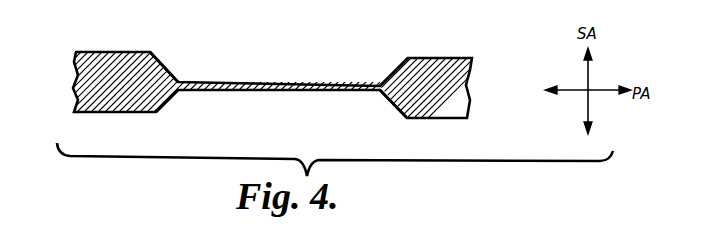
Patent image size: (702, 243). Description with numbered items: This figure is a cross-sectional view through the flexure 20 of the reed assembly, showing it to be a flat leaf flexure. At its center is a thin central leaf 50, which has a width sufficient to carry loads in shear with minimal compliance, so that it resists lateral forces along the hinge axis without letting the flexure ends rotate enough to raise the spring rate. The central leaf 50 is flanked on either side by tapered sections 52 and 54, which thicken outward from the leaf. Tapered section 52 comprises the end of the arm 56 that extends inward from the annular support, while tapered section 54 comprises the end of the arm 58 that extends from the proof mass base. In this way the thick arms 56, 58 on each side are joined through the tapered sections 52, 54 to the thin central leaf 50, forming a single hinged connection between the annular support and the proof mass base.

The flexure 20 is at (271, 63).
The central leaf 50 is at (290, 91).
The tapered section 52 is at (169, 104).
The tapered section 54 is at (404, 110).
The arm 56 is at (80, 52).
The arm 58 is at (450, 58).